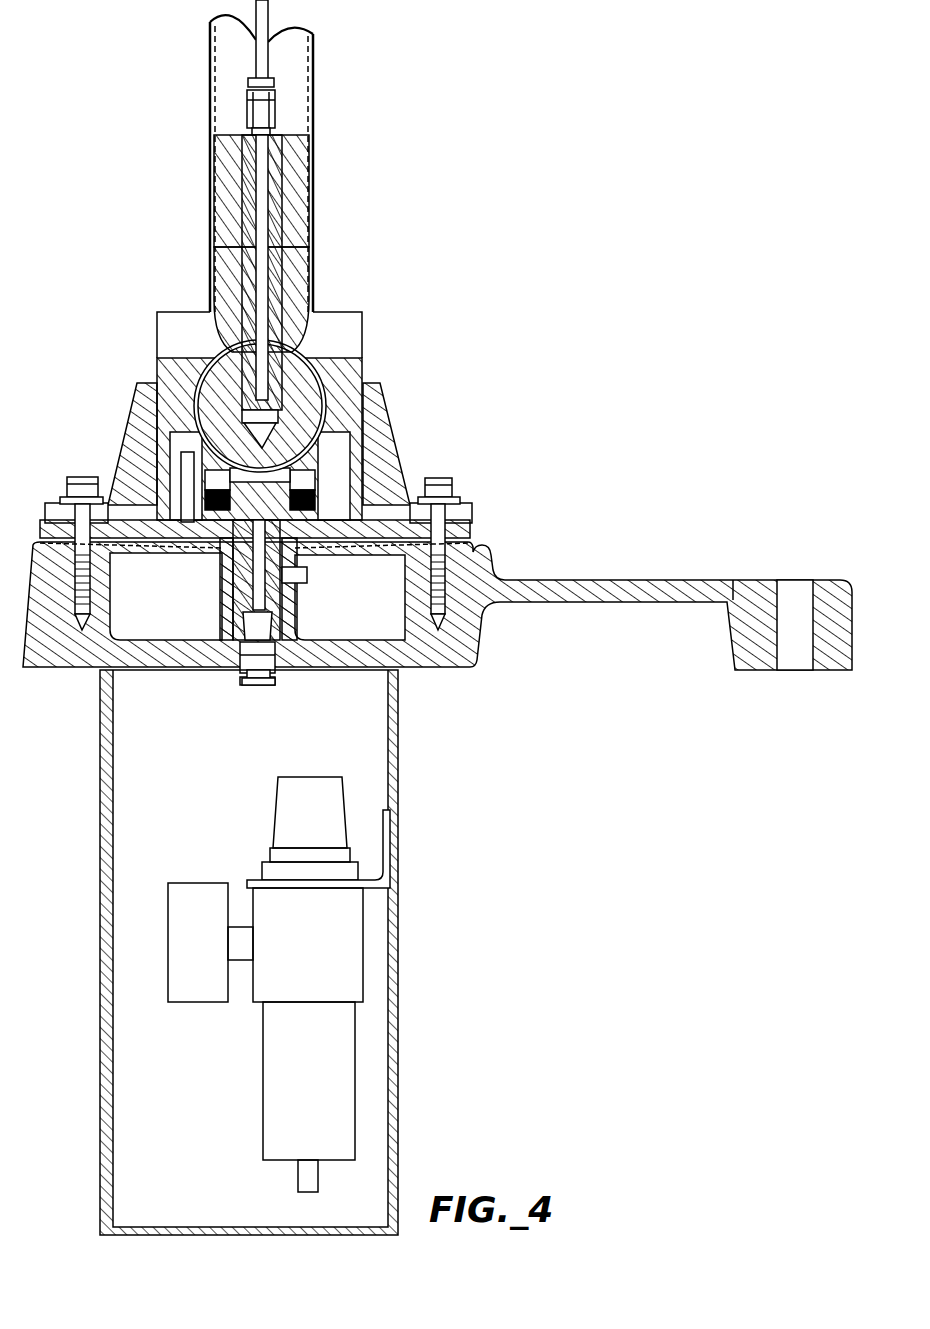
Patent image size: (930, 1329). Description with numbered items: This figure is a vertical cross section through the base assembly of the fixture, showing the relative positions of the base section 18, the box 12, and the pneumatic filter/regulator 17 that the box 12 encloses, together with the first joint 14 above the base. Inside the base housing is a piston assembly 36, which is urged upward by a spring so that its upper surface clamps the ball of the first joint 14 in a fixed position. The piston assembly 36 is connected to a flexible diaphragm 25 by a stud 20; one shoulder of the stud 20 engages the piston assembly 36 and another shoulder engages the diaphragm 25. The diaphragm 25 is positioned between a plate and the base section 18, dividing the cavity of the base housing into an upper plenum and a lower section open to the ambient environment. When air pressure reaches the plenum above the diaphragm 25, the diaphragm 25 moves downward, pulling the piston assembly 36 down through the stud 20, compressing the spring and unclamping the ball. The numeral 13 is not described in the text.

The box 12 is at (398, 760).
The valve base block 13 is at (551, 532).
The first joint 14 is at (412, 206).
The filter/regulator 17 is at (354, 1078).
The base section 18 is at (755, 670).
The stud 20 is at (216, 570).
The diaphragm 25 is at (385, 560).
The piston assembly 36 is at (392, 423).